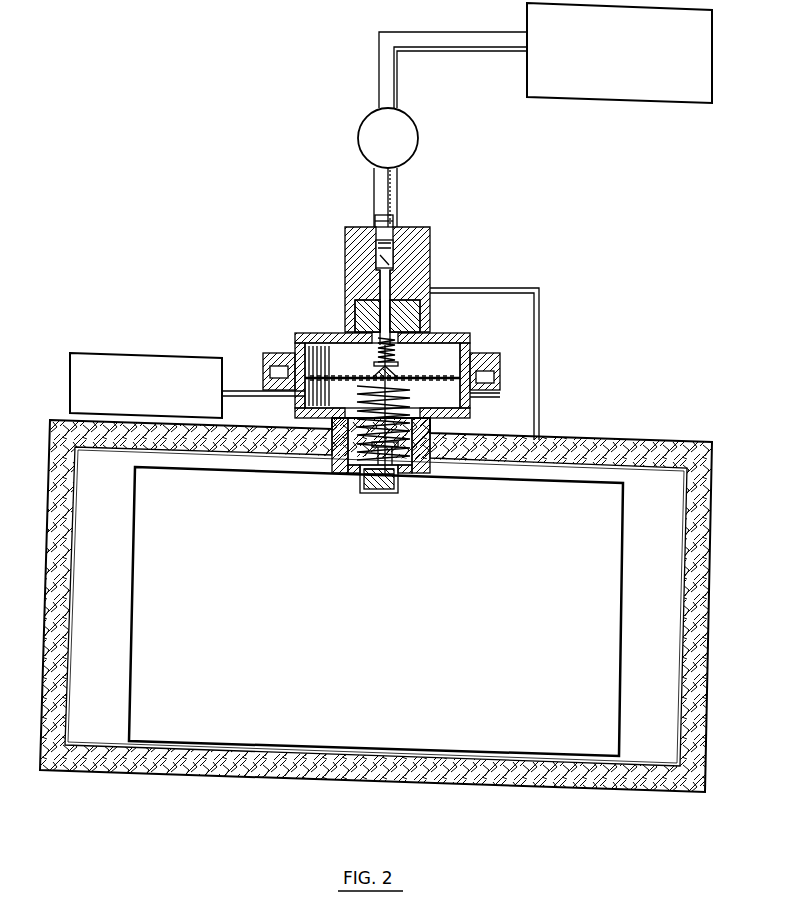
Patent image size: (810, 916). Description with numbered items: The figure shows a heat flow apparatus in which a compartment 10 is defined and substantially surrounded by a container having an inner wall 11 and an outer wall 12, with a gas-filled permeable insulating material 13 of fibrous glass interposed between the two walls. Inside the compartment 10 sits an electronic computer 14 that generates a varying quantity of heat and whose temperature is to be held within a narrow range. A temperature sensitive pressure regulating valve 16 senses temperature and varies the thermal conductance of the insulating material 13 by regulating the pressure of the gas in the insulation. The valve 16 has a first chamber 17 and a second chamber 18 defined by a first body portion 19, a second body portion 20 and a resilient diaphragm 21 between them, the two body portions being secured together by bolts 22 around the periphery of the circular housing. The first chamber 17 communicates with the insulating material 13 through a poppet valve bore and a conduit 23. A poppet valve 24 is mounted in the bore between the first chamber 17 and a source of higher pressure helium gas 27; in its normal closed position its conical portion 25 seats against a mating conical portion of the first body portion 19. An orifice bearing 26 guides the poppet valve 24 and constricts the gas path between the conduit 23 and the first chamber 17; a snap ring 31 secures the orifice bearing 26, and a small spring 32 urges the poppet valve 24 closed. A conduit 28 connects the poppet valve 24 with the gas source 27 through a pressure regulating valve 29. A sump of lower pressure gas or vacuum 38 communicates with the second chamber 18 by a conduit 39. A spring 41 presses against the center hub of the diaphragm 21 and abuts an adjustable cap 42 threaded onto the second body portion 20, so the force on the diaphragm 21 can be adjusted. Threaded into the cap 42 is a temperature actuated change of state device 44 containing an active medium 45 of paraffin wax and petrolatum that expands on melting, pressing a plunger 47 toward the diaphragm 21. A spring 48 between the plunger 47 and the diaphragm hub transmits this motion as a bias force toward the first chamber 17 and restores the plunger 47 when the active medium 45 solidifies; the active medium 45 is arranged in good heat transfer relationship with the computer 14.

The compartment 10 is at (394, 626).
The inner wall 11 is at (682, 712).
The outer wall 12 is at (706, 726).
The gas-filled permeable insulating material 13 is at (612, 792).
The electronic computer 14 is at (376, 611).
The temperature sensitive pressure regulating valve 16 is at (346, 246).
The first chamber 17 is at (452, 358).
The second chamber 18 is at (382, 376).
The first body portion 19 is at (445, 345).
The second body portion 20 is at (466, 417).
The resilient diaphragm 21 is at (317, 377).
The bolts 22 is at (485, 399).
The conduit 23 is at (478, 287).
The poppet valve 24 is at (378, 289).
The conical portion 25 is at (387, 253).
The orifice bearing 26 is at (405, 318).
The source of higher pressure helium gas 27 is at (692, 93).
The conduit 28 is at (378, 191).
The pressure regulating valve 29 is at (418, 134).
The snap ring 31 is at (375, 343).
The small spring 32 is at (400, 342).
The sump of lower pressure gas or vacuum 38 is at (75, 369).
The conduit 39 is at (251, 390).
The spring 41 is at (430, 470).
The adjustable cap 42 is at (333, 460).
The temperature actuated change of state device 44 is at (375, 490).
The active medium 45 is at (398, 488).
The plunger 47 is at (363, 472).
The spring 48 is at (366, 402).